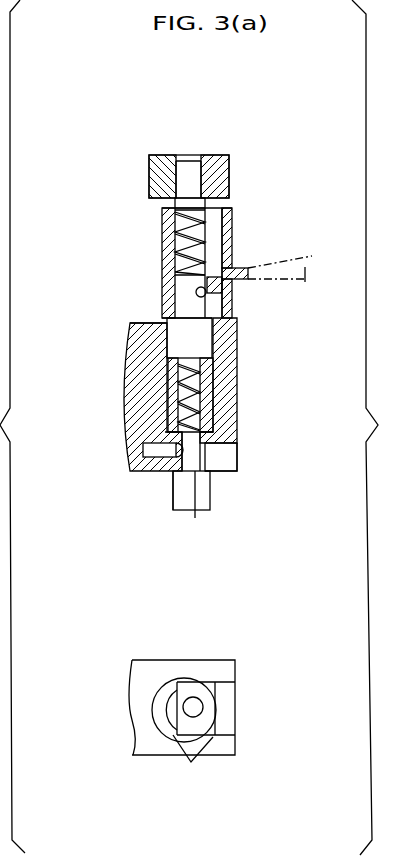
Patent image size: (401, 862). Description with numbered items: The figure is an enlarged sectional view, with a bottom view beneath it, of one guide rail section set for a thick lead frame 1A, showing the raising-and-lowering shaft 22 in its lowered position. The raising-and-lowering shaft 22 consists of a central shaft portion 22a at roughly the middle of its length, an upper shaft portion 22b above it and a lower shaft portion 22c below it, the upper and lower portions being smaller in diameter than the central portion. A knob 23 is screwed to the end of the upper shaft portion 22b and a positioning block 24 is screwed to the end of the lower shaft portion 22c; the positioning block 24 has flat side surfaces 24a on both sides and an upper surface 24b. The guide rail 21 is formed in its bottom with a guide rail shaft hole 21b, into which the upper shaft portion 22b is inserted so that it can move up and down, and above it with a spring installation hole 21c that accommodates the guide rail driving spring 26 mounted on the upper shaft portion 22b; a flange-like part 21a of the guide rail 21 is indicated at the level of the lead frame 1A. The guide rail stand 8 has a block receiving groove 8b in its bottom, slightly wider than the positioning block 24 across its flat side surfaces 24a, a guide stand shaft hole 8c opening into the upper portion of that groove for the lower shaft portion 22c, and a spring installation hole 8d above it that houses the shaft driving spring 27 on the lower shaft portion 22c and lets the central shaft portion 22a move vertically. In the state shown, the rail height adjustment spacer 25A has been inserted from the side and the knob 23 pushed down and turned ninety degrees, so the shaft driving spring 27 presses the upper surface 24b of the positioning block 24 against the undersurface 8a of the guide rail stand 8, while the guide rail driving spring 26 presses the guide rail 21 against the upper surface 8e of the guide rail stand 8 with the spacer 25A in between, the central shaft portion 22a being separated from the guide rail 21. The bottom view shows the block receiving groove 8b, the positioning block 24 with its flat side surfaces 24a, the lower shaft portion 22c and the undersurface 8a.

The thick lead frame 1A is at (313, 258).
The guide rail stand 8 is at (186, 409).
The undersurface of guide rail stand 8a is at (235, 473).
The block receiving groove 8b is at (226, 455).
The guide stand shaft hole 8c is at (145, 450).
The spring installation hole 8d is at (168, 395).
The upper surface of guide rail stand 8e is at (150, 328).
The guide rail 21 is at (213, 259).
The cap flange 21a is at (235, 270).
The guide rail shaft hole 21b is at (225, 286).
The spring installation hole 21c is at (163, 232).
The raising-and-lowering shaft 22 is at (176, 364).
The central shaft portion 22a is at (160, 325).
The upper shaft portion 22b is at (180, 237).
The lower shaft portion 22c is at (183, 470).
The knob 23 is at (167, 162).
The positioning block 24 is at (209, 513).
The flat side surfaces 24a is at (173, 490).
The upper surface of positioning block 24b is at (196, 512).
The rail height adjustment spacer 25A is at (224, 320).
The guide rail driving spring 26 is at (170, 268).
The shaft driving spring 27 is at (200, 412).